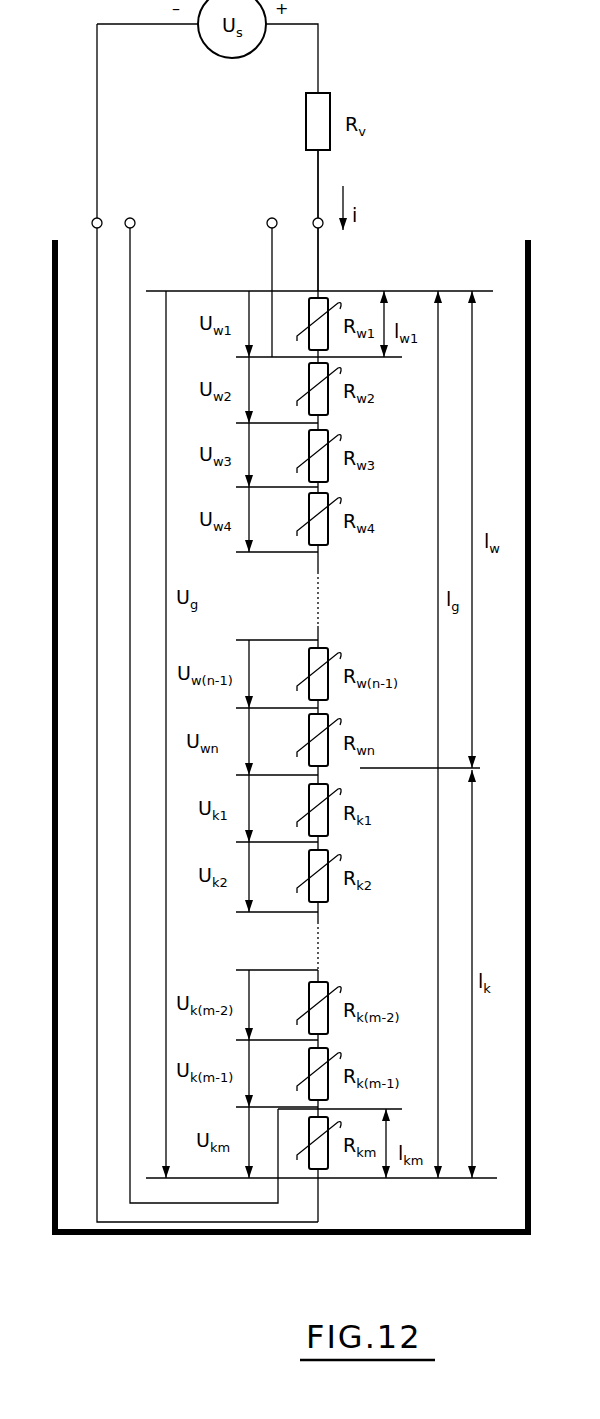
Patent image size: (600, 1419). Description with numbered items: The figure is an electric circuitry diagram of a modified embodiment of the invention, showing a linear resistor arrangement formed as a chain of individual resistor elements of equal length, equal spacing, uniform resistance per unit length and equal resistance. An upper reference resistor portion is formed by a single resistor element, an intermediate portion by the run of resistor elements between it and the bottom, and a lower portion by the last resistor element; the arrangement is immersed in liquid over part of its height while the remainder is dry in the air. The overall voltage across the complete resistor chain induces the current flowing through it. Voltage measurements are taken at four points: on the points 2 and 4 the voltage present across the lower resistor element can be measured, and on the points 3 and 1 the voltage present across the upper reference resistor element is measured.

The measuring point 1 is at (328, 220).
The measuring point 2 is at (205, 623).
The measuring point 3 is at (282, 287).
The measuring point 4 is at (201, 710).